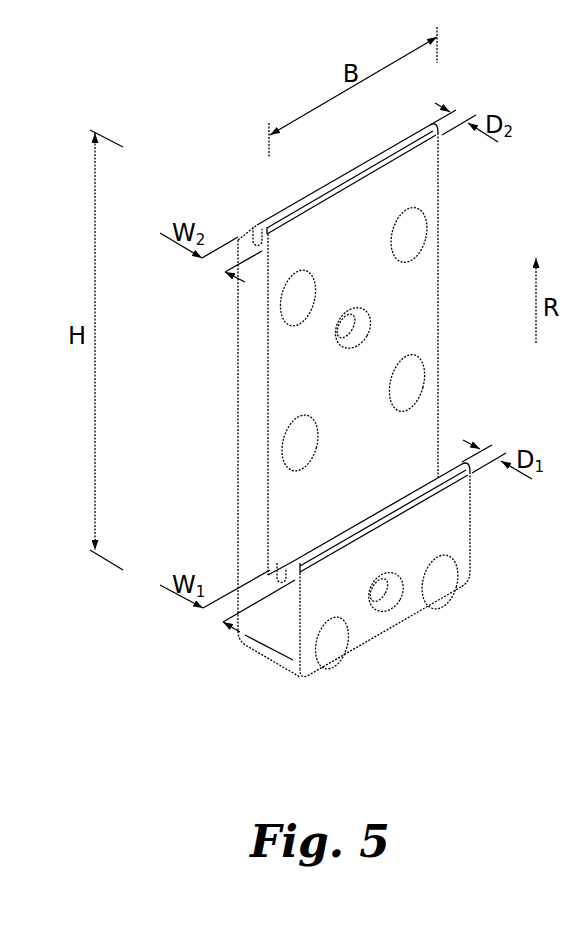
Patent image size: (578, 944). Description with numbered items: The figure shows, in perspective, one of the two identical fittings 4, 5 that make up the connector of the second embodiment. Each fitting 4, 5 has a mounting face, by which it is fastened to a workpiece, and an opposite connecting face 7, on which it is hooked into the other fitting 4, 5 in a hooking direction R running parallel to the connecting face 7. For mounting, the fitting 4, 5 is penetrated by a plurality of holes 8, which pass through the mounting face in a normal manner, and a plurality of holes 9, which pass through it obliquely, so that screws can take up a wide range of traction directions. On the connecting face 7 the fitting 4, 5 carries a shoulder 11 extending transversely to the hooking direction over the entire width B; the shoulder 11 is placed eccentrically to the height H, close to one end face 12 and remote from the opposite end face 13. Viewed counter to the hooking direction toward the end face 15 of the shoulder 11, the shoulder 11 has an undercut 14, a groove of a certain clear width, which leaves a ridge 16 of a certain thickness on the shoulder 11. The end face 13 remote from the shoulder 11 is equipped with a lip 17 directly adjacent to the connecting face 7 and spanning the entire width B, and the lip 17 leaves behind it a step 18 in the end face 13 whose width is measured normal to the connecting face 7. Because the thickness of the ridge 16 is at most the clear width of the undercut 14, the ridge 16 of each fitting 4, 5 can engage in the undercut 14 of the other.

The fitting 4 is at (337, 437).
The fitting 5 is at (337, 437).
The connecting face 7 is at (413, 179).
The holes 8 is at (297, 430).
The holes 9 is at (347, 340).
The shoulder 11 is at (458, 536).
The end face 12 is at (400, 634).
The end face 13 is at (398, 148).
The undercut 14 is at (268, 568).
The end face of the shoulder 15 is at (449, 464).
The ridge 16 is at (300, 576).
The lip 17 is at (328, 187).
The step 18 is at (250, 236).